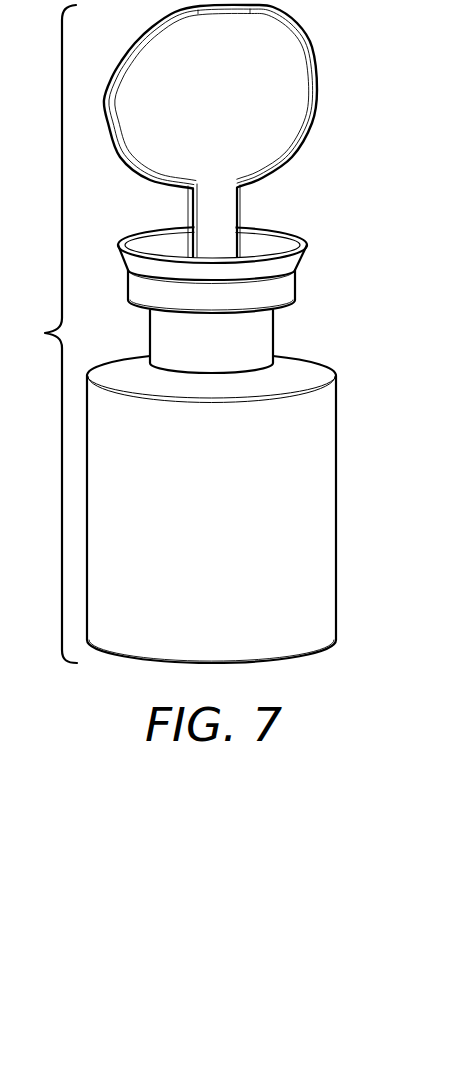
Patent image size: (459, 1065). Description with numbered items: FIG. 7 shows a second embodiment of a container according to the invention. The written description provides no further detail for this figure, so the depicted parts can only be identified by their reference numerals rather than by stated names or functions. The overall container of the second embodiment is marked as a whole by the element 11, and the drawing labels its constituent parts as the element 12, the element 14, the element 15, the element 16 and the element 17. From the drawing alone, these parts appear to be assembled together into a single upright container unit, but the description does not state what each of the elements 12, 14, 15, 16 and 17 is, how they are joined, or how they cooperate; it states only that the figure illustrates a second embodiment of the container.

The dispensing container assembly 11 is at (48, 334).
The container body 12 is at (323, 475).
The cap 14 is at (276, 242).
The ring handle 15 is at (305, 90).
The neck 16 is at (265, 333).
The stem 17 is at (208, 213).